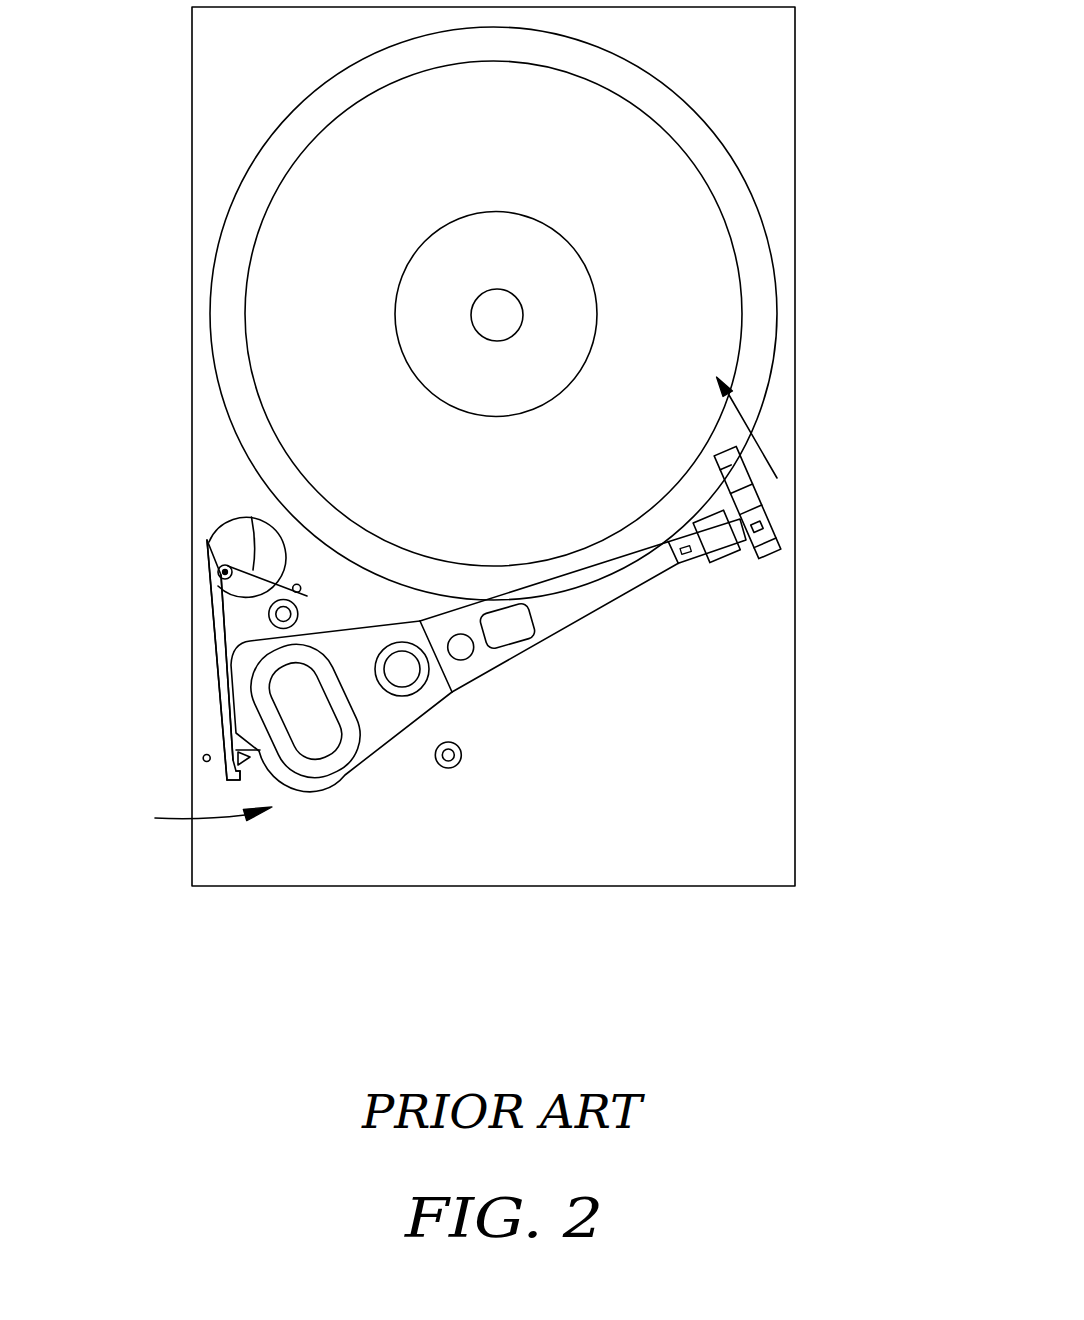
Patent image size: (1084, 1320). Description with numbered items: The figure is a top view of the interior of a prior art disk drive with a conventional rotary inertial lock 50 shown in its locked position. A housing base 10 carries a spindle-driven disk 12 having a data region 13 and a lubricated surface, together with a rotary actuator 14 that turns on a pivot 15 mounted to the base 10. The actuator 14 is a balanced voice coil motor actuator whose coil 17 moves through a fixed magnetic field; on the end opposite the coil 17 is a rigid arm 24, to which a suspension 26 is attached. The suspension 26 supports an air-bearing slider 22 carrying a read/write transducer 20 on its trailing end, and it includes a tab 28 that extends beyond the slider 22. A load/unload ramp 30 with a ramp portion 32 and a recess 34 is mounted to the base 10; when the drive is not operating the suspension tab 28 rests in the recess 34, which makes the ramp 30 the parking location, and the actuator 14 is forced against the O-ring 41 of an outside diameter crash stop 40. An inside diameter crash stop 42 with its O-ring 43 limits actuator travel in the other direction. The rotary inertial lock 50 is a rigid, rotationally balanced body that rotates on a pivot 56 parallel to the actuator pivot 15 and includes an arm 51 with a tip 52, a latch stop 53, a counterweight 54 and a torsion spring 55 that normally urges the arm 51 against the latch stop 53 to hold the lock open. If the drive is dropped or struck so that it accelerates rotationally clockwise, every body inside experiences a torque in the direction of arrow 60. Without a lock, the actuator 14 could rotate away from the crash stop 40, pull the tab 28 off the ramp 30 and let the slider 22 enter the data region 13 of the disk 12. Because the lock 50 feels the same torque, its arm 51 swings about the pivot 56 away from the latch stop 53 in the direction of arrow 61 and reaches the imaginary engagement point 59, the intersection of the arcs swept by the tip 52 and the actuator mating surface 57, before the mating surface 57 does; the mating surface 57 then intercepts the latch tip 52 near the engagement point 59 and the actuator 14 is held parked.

The housing base 10 is at (765, 835).
The disk 12 is at (765, 311).
The data region 13 is at (727, 272).
The rotary actuator 14 is at (315, 797).
The pivot 15 is at (402, 672).
The coil 17 is at (297, 777).
The transducer 20 is at (705, 560).
The slider 22 is at (737, 550).
The rigid arm 24 is at (568, 623).
The suspension 26 is at (678, 563).
The tab 28 is at (754, 511).
The load/unload ramp 30 is at (773, 545).
The ramp portion 32 is at (731, 465).
The recess 34 is at (752, 512).
The outside diameter crash stop 40 is at (217, 648).
The O-ring 41 is at (270, 616).
The inside diameter crash stop 42 is at (449, 757).
The O-ring 43 is at (467, 758).
The rotary inertial lock 50 is at (207, 555).
The arm 51 is at (220, 692).
The tip 52 is at (240, 780).
The latch stop 53 is at (203, 757).
The counterweight 54 is at (207, 540).
The torsion spring 55 is at (233, 537).
The pivot 56 is at (219, 573).
The mating surface 57 is at (268, 770).
The engagement point 59 is at (237, 757).
The arrow 60 is at (757, 426).
The arrow 61 is at (163, 829).